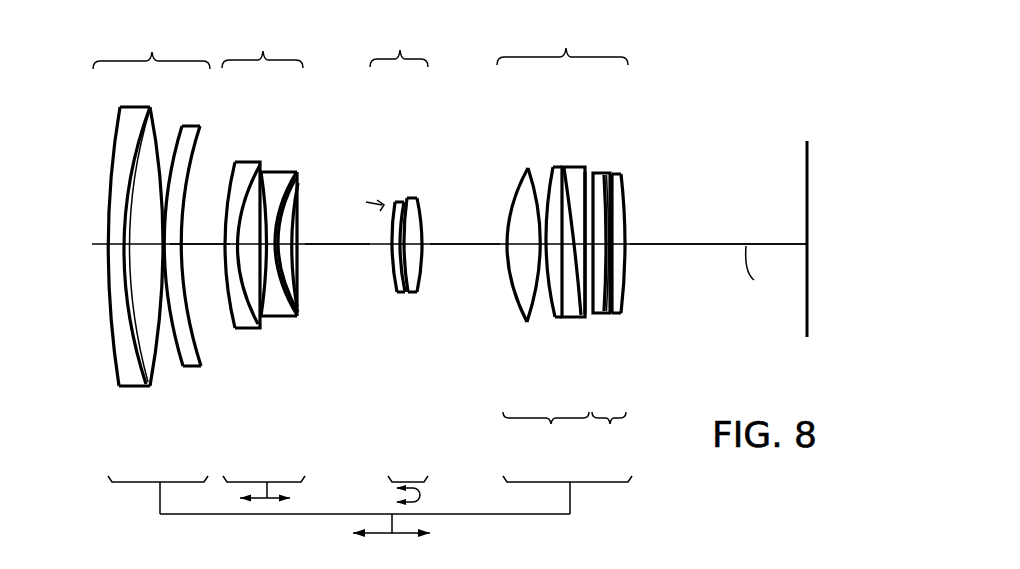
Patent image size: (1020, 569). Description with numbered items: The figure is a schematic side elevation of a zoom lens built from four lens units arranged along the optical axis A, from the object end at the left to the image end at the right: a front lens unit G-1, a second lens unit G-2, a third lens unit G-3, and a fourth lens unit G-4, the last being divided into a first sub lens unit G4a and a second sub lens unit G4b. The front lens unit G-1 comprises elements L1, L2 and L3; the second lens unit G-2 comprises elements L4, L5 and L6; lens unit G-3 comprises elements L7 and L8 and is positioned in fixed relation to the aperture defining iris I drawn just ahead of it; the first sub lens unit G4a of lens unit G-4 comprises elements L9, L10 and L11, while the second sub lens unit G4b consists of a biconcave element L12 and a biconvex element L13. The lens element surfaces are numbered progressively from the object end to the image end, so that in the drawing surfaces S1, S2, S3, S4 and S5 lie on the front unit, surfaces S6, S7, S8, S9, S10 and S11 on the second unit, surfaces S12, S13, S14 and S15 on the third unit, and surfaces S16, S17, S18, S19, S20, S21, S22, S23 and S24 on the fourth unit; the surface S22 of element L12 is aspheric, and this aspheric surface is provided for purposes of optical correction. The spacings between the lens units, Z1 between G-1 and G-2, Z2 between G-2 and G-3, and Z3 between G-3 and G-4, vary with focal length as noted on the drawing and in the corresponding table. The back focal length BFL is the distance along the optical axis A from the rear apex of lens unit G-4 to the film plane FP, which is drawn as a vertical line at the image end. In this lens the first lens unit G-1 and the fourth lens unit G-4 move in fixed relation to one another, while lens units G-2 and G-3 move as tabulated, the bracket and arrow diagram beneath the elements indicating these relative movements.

The lens element L1 is at (124, 118).
The lens element L2 is at (150, 144).
The lens element L3 is at (197, 134).
The lens element L4 is at (243, 167).
The lens element L5 is at (277, 178).
The lens element L6 is at (300, 198).
The lens element L7 is at (395, 200).
The lens element L8 is at (416, 198).
The lens element L9 is at (517, 180).
The lens element L10 is at (553, 170).
The lens element L11 is at (584, 173).
The biconcave element L12 is at (602, 177).
The biconvex element L13 is at (618, 197).
The lens element surface S1 is at (115, 362).
The lens element surface S2 is at (125, 374).
The lens element surface S3 is at (152, 358).
The lens element surface S4 is at (158, 354).
The lens element surface S5 is at (188, 366).
The lens element surface S6 is at (195, 352).
The lens element surface S7 is at (230, 296).
The lens element surface S8 is at (256, 330).
The lens element surface S9 is at (300, 308).
The lens element surface S10 is at (298, 292).
The lens element surface S11 is at (294, 268).
The lens element surface S12 is at (393, 260).
The lens element surface S13 is at (412, 294).
The lens element surface S14 is at (417, 258).
The lens element surface S15 is at (422, 254).
The lens element surface S16 is at (515, 290).
The lens element surface S17 is at (546, 326).
The lens element surface S18 is at (549, 320).
The lens element surface S19 is at (586, 318).
The lens element surface S20 is at (612, 318).
The lens element surface S21 is at (603, 290).
The aspheric surface S22 is at (612, 283).
The lens element surface S23 is at (608, 262).
The lens element surface S24 is at (607, 272).
The front lens unit G-1 is at (151, 46).
The second lens unit G-2 is at (262, 45).
The third lens unit G-3 is at (399, 44).
The fourth lens unit G-4 is at (562, 43).
The first sub lens unit G4a is at (546, 431).
The second sub lens unit G4b is at (610, 431).
The spacing between lens units Z1 is at (200, 236).
The spacing between lens units Z2 is at (337, 238).
The spacing between lens units Z3 is at (465, 238).
The back focal length BFL is at (718, 229).
The focal plane FP is at (807, 162).
The optical axis A is at (759, 268).
The aperture defining iris I is at (369, 201).